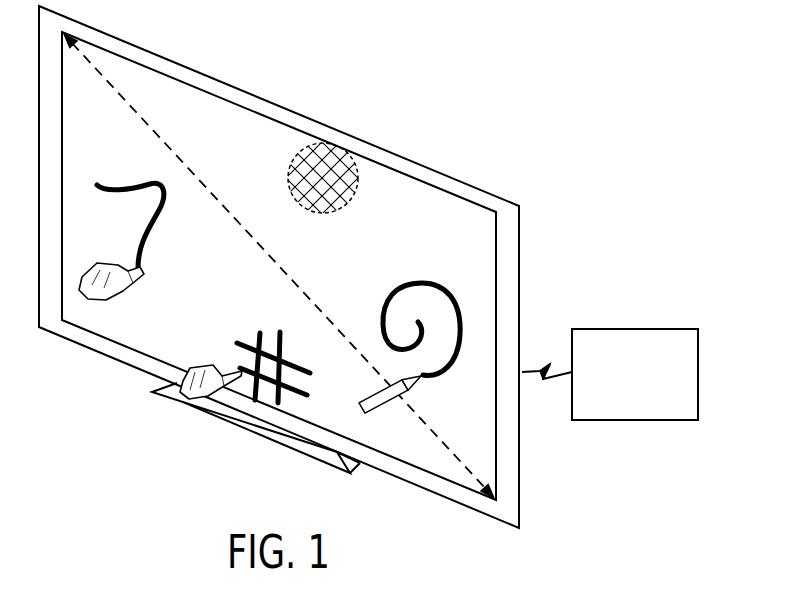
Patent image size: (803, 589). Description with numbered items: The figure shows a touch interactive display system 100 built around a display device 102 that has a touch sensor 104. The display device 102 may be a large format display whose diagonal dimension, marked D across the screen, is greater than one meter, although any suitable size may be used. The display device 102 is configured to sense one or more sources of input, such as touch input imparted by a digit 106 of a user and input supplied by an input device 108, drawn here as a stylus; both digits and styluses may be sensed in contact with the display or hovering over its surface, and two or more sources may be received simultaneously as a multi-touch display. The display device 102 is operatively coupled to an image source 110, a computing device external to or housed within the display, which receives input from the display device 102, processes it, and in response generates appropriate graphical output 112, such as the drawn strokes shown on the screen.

The touch interactive display system 100 is at (279, 267).
The display device 102 is at (168, 60).
The touch sensor 104 is at (352, 161).
The digit 106 is at (143, 275).
The input device 108 is at (362, 412).
The image source 110 is at (619, 414).
The graphical output 112 is at (135, 185).